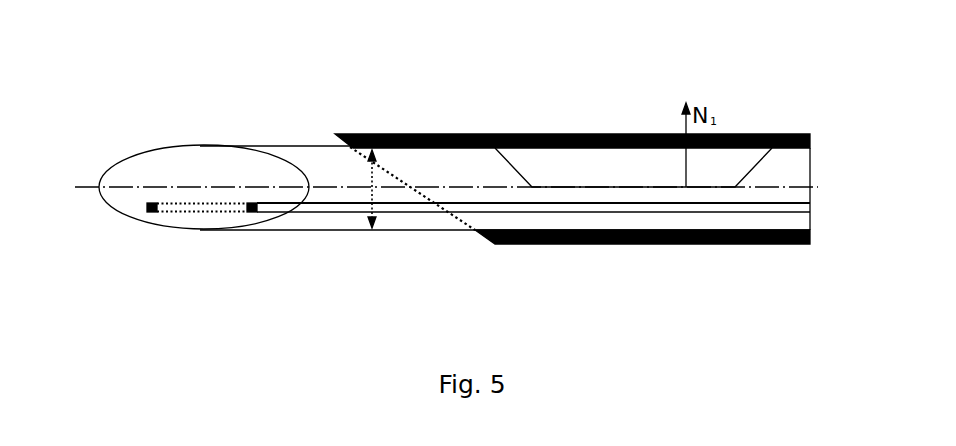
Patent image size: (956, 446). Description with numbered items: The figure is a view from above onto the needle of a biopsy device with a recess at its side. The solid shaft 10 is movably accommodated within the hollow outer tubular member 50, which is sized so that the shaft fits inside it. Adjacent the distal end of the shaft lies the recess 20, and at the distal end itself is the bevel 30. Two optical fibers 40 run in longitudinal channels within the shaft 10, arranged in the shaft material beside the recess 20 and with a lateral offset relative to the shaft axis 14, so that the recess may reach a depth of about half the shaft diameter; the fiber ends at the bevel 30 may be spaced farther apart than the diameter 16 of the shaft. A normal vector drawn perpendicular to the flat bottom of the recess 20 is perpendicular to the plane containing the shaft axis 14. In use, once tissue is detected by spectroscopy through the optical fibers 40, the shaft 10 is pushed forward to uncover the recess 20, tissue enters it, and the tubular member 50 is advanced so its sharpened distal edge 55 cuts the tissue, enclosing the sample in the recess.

The shaft 10 is at (388, 222).
The shaft axis 14 is at (135, 187).
The diameter 16 is at (372, 193).
The recess 20 is at (624, 173).
The bevel 30 is at (225, 165).
The optical fibers 40 is at (328, 208).
The outer tubular member 50 is at (513, 135).
The sharpened distal edge 55 is at (346, 146).